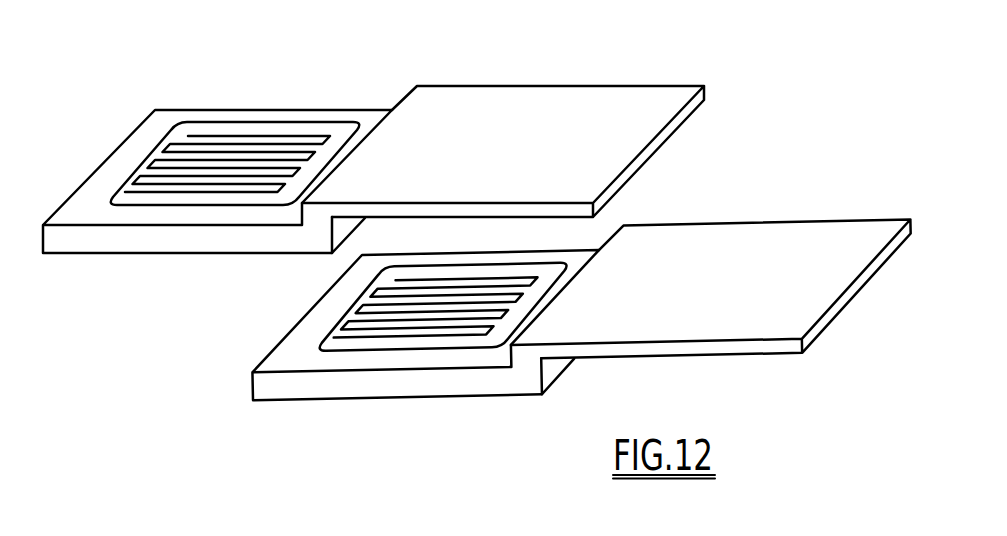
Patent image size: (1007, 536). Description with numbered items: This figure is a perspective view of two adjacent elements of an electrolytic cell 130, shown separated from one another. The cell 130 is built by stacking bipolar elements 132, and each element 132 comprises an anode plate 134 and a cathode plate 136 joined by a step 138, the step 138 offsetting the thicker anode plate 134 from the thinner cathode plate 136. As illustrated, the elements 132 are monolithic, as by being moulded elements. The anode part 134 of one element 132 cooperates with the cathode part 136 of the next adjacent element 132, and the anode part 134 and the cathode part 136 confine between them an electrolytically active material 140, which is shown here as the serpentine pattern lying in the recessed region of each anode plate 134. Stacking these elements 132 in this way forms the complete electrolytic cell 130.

The electrolytic cell 130 is at (653, 188).
The bipolar element 132 is at (170, 242).
The anode plate 134 is at (302, 110).
The cathode plate 136 is at (573, 97).
The step 138 is at (315, 237).
The electrolytically active material 140 is at (222, 153).